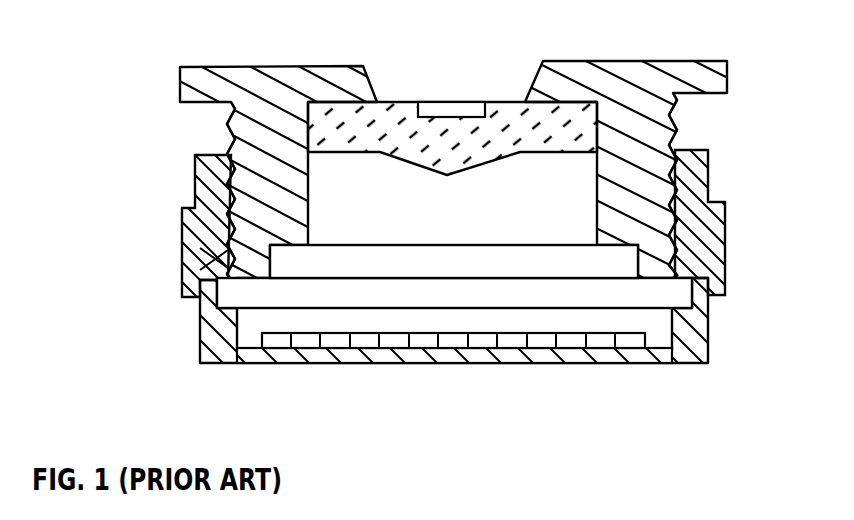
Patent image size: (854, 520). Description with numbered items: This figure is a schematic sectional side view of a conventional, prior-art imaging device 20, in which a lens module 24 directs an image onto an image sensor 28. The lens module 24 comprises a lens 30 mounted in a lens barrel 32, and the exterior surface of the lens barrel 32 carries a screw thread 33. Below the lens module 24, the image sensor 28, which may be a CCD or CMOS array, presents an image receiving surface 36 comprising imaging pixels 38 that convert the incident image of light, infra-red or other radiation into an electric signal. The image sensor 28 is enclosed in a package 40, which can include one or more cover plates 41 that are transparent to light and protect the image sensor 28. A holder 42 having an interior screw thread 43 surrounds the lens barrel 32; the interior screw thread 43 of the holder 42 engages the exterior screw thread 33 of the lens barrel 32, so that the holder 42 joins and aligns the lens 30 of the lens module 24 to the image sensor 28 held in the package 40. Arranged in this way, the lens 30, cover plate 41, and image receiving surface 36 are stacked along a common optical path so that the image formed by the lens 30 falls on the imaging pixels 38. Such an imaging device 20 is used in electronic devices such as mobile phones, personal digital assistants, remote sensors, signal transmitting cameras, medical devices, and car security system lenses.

The imaging device 20 is at (454, 260).
The lens module 24 is at (174, 121).
The image sensor 28 is at (607, 345).
The lens 30 is at (322, 102).
The lens barrel 32 is at (679, 128).
The screw thread 33 is at (680, 190).
The image receiving surface 36 is at (494, 322).
The imaging pixels 38 is at (398, 340).
The package 40 is at (198, 351).
The cover plate 41 is at (388, 277).
The holder 42 is at (182, 214).
The interior screw thread 43 is at (198, 243).